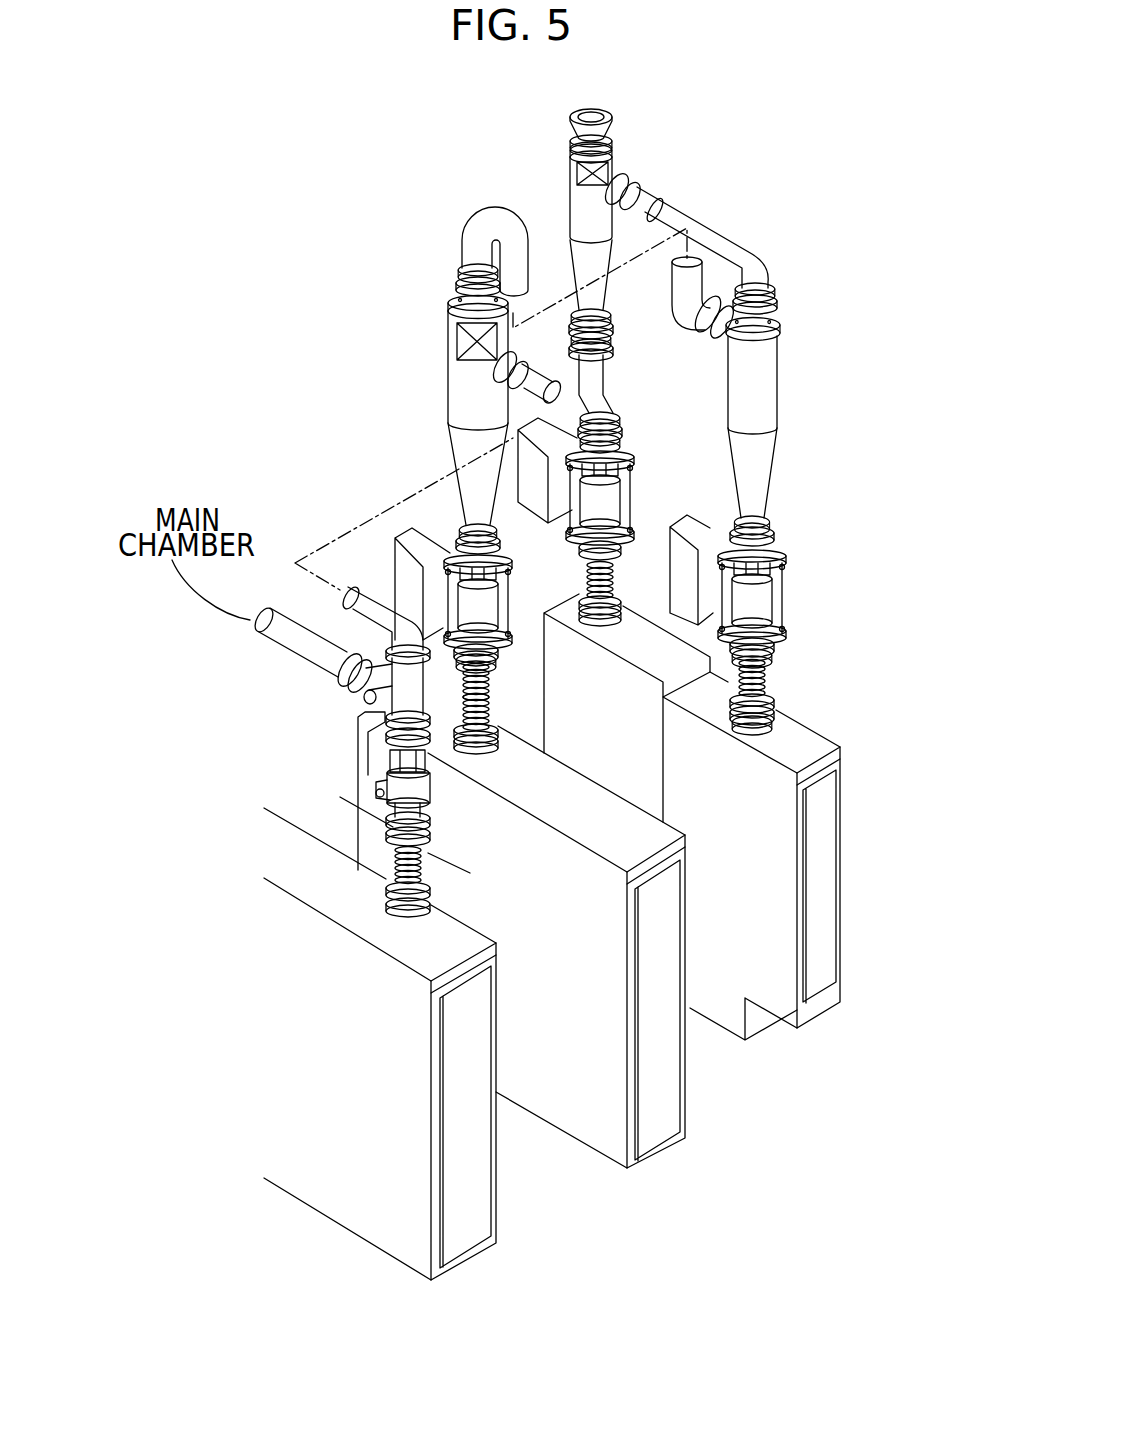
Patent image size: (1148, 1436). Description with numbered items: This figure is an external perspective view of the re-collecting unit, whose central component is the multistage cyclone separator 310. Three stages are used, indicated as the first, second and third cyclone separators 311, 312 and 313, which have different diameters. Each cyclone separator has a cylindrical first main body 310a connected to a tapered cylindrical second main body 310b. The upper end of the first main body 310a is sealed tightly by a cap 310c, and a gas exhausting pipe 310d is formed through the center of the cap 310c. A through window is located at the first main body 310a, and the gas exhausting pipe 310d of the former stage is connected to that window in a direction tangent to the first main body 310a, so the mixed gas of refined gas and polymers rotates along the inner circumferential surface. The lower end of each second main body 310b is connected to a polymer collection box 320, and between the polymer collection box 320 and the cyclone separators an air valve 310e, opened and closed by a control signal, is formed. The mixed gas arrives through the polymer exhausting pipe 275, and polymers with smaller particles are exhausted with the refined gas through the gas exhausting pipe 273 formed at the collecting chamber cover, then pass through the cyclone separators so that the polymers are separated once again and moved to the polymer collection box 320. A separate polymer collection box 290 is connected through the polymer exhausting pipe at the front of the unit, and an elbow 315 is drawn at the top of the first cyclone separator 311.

The cyclone separator 310 is at (773, 417).
The first main body 310a is at (810, 403).
The second main body 310b is at (765, 472).
The cap 310c is at (766, 322).
The gas exhausting pipe 310d is at (718, 238).
The air valve 310e is at (787, 600).
The first cyclone separator 311 is at (390, 399).
The second cyclone separator 312 is at (830, 536).
The third cyclone separator 313 is at (528, 147).
The exhaust elbow 315 is at (494, 237).
The gas exhausting pipe 273 is at (316, 667).
The polymer exhausting pipe 275 is at (447, 832).
The polymer collection box 290 is at (380, 1200).
The polymer collection box 320 is at (650, 652).